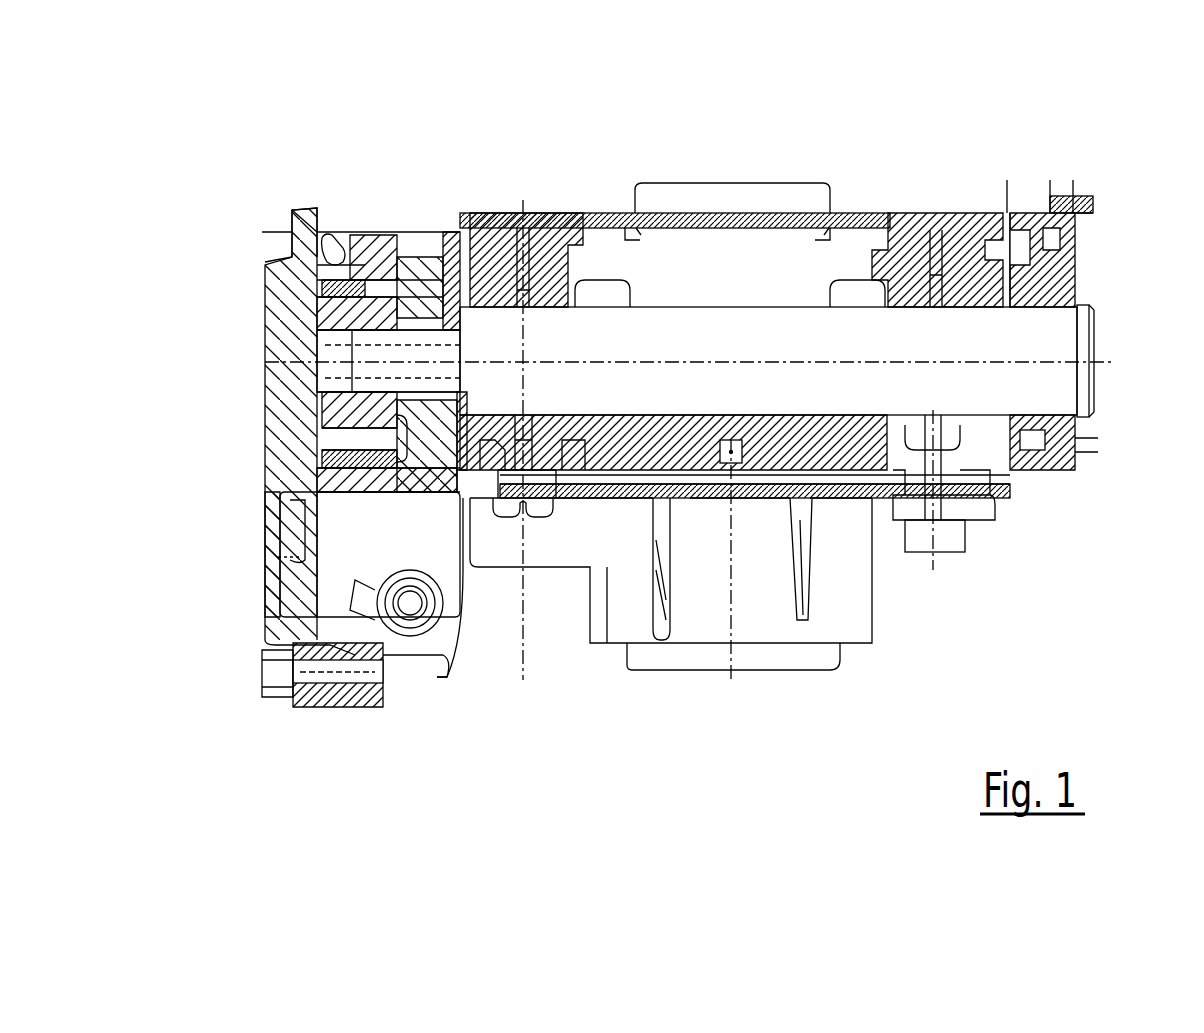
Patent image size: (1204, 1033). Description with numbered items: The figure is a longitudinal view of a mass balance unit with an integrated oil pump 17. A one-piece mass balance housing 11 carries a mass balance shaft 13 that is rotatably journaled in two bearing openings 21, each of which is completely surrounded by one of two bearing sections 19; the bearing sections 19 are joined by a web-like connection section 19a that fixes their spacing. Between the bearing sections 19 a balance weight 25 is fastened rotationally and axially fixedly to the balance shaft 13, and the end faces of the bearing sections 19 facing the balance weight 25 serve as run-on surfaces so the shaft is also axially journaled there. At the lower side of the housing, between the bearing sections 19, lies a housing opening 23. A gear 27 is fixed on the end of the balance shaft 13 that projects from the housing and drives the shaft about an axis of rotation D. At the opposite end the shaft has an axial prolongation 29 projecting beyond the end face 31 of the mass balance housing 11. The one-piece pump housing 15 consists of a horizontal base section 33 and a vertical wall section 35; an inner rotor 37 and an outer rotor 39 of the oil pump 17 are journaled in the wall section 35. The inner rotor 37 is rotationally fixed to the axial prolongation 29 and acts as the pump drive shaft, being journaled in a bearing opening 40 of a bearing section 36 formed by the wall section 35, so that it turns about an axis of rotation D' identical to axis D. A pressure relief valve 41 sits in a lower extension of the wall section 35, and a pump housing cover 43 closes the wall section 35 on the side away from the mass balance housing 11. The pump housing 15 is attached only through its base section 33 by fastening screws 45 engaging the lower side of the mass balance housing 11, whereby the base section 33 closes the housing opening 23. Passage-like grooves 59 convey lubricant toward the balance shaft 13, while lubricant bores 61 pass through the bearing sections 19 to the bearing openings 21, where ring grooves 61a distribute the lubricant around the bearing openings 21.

The mass balance housing 11 is at (603, 212).
The mass balance shaft 13 is at (797, 330).
The pump housing 15 is at (327, 214).
The oil pump 17 is at (272, 283).
The bearing sections 19 is at (905, 255).
The connection section 19a is at (667, 225).
The bearing openings 21 is at (548, 300).
The housing opening 23 is at (703, 493).
The balance weight 25 is at (817, 450).
The gear 27 is at (1050, 463).
The axial prolongation 29 is at (398, 225).
The end face 31 is at (440, 215).
The base section 33 is at (601, 490).
The wall section 35 is at (395, 340).
The bearing section 36 is at (423, 423).
The inner rotor 37 is at (330, 318).
The outer rotor 39 is at (322, 236).
The bearing opening 40 is at (420, 433).
The pressure relief valve 41 is at (433, 648).
The pump housing cover 43 is at (276, 557).
The fastening screws 45 is at (950, 535).
The passage-like grooves 59 is at (490, 500).
The lubricant bores 61 is at (578, 470).
The ring grooves 61a is at (523, 300).
The axis of rotation D is at (1131, 332).
The axis of rotation D' is at (275, 394).